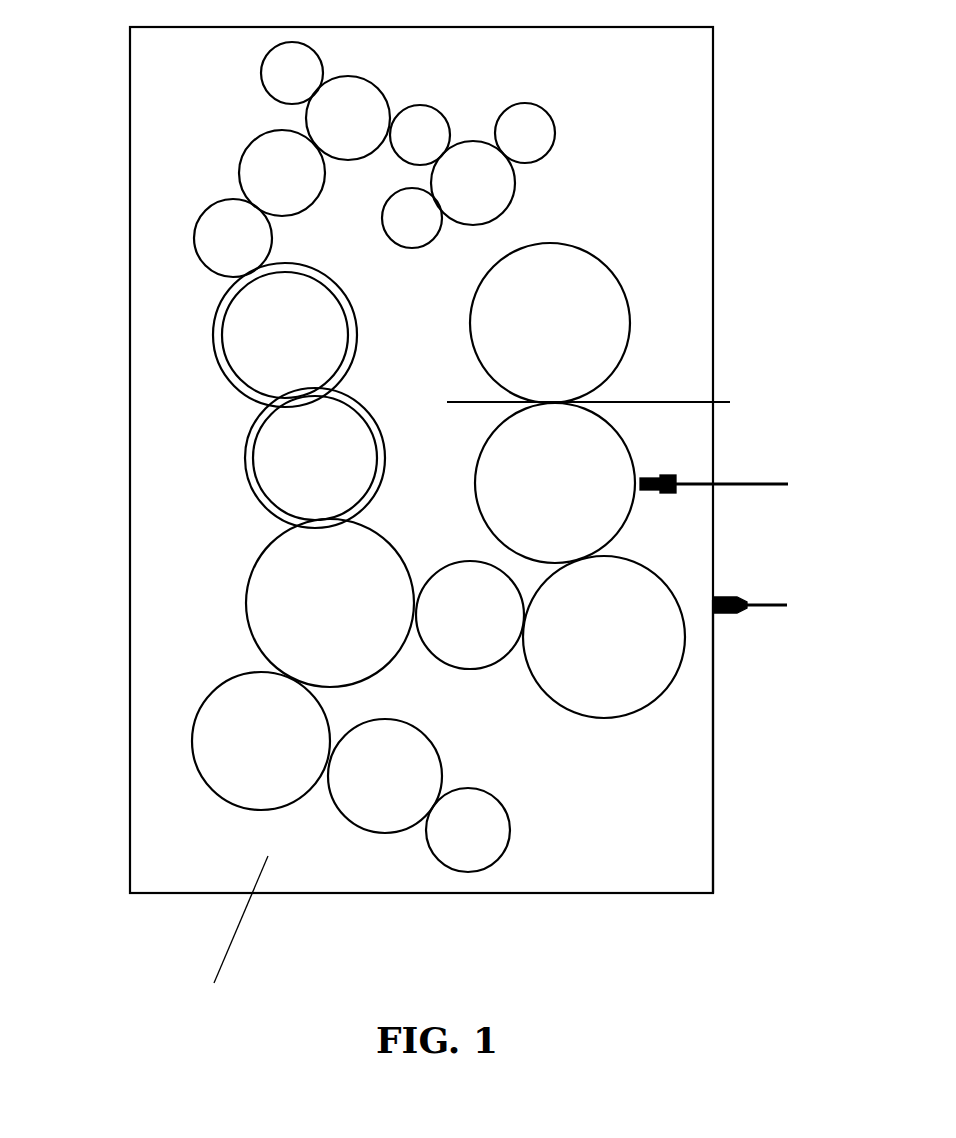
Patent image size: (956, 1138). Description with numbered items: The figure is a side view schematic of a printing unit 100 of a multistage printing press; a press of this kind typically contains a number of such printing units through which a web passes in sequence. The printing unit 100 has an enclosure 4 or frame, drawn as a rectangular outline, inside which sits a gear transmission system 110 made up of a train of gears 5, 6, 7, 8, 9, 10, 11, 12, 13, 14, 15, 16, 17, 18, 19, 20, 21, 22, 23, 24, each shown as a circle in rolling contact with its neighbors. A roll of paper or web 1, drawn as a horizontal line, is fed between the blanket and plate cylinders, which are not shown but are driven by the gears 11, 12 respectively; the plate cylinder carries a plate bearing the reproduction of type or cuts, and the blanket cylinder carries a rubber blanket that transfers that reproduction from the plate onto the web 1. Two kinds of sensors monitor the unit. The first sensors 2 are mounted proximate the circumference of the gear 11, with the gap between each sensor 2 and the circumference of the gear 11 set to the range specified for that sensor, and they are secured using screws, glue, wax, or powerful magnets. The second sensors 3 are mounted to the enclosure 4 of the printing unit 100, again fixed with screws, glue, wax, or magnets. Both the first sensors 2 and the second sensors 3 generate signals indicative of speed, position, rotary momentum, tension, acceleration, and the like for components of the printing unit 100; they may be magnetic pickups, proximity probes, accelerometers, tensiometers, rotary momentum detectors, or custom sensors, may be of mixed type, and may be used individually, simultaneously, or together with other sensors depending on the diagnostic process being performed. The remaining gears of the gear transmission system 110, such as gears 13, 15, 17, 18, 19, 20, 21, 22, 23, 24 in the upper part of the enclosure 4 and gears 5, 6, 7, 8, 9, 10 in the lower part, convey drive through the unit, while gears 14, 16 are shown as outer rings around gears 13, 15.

The web 1 is at (672, 398).
The first sensors 2 is at (667, 473).
The second sensors 3 is at (735, 595).
The enclosure 4 is at (715, 752).
The gear 5 is at (468, 830).
The gear 6 is at (385, 776).
The gear 7 is at (261, 741).
The gear 8 is at (330, 603).
The gear 9 is at (470, 615).
The gear 10 is at (604, 637).
The gear 11 is at (555, 483).
The gear 12 is at (550, 323).
The gear 13 is at (315, 458).
The gear 14 is at (247, 472).
The gear 15 is at (285, 335).
The gear 16 is at (213, 350).
The gear 17 is at (233, 238).
The gear 18 is at (282, 173).
The gear 19 is at (292, 73).
The gear 20 is at (348, 118).
The gear 21 is at (420, 135).
The gear 22 is at (525, 133).
The gear 23 is at (473, 183).
The gear 24 is at (412, 218).
The printing unit 100 is at (738, 857).
The gear transmission system 110 is at (213, 929).